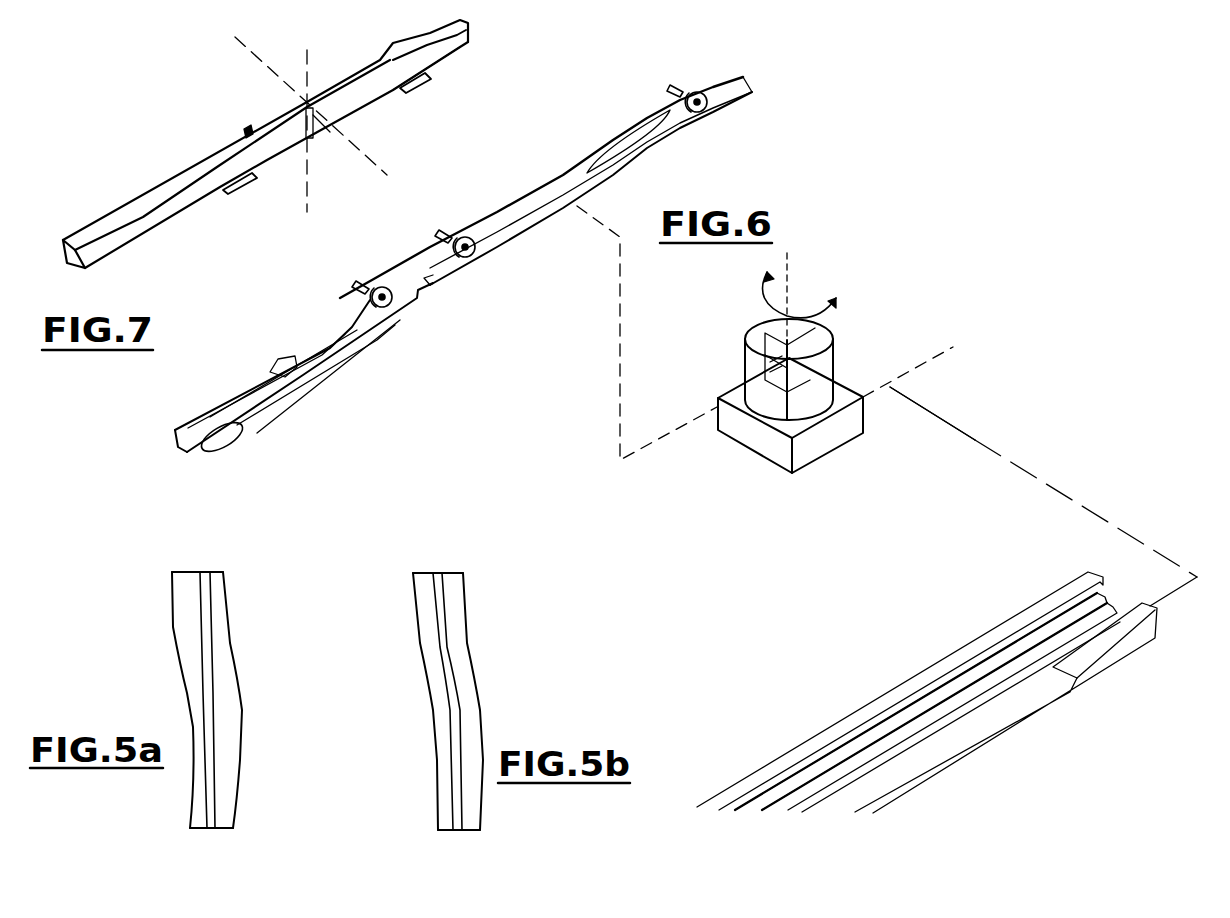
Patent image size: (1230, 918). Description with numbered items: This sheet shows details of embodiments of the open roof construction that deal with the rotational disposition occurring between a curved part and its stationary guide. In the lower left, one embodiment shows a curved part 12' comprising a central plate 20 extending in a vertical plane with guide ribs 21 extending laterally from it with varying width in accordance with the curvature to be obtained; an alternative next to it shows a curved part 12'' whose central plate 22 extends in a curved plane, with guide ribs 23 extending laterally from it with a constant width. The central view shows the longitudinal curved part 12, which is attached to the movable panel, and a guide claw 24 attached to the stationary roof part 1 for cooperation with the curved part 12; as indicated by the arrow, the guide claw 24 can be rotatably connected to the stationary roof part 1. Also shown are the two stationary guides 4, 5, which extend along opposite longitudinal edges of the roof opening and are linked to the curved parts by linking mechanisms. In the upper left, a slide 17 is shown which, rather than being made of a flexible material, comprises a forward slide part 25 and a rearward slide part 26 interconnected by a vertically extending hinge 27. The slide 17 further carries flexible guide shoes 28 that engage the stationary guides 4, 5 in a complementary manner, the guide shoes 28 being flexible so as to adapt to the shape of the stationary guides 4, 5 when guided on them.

In FIG. 6, the stationary roof part 1 is at (1002, 511).
In FIG. 6, the stationary guide 4 is at (927, 692).
In FIG. 6, the stationary guide 5 is at (877, 707).
In FIG. 6, the curved part 12 is at (463, 267).
In FIG. 5A, the curved part 12' is at (232, 700).
In FIG. 5B, the curved part 12'' is at (480, 699).
In FIG. 7, the slide 17 is at (249, 125).
In FIG. 5A, the central plate 20 is at (207, 675).
In FIG. 5A, the guide ribs 21 is at (197, 753).
In FIG. 5B, the central plate 22 is at (440, 648).
In FIG. 5B, the guide ribs 23 is at (440, 703).
In FIG. 6, the guide claw 24 is at (823, 370).
In FIG. 7, the forward slide part 25 is at (182, 183).
In FIG. 7, the rearward slide part 26 is at (386, 82).
In FIG. 7, the hinge 27 is at (313, 120).
In FIG. 7, the guide shoes 28 is at (243, 192).